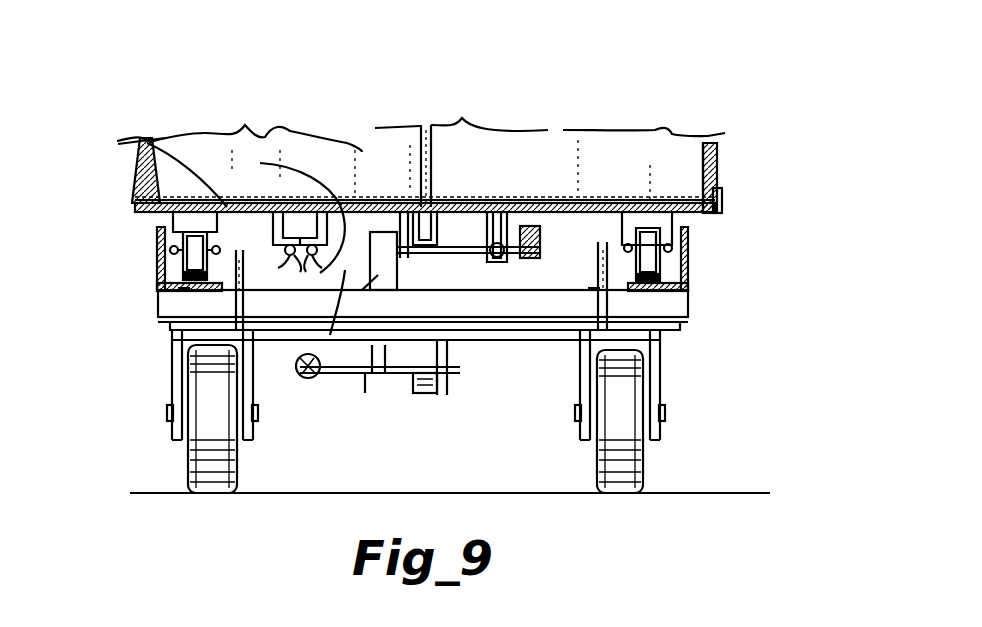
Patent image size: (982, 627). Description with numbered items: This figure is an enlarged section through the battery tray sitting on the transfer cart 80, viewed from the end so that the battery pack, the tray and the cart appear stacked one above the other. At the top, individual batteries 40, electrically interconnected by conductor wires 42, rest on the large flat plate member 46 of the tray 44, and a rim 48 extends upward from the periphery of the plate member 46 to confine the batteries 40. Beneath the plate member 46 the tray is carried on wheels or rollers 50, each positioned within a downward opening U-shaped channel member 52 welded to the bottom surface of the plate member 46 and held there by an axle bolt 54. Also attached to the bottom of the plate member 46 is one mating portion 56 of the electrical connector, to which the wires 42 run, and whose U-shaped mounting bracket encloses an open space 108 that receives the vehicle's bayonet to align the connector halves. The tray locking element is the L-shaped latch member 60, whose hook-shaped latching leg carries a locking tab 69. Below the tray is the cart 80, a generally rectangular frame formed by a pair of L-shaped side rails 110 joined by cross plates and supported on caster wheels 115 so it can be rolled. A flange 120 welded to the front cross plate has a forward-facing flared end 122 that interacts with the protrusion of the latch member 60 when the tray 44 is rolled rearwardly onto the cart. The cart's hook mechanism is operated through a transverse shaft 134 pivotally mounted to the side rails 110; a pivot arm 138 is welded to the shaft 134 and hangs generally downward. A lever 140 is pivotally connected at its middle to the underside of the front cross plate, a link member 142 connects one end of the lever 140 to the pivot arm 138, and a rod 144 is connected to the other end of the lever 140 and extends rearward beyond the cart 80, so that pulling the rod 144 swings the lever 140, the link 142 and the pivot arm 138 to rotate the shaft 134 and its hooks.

The individual batteries 40 is at (360, 152).
The electrical conductor wires 42 is at (268, 250).
The tray 44 is at (752, 173).
The plate member 46 is at (653, 207).
The rim 48 is at (722, 190).
The wheels or rollers 50 is at (187, 262).
The U-shaped channel members 52 is at (140, 145).
The axle bolts 54 is at (160, 241).
The mating portion of electrical connector 56 is at (357, 330).
The L-shaped latch member 60 is at (470, 253).
The locking tab 69 is at (420, 203).
The cart 80 is at (742, 383).
The open space 108 is at (345, 270).
The L-shaped side rails 110 is at (165, 290).
The caster wheels 115 is at (203, 447).
The flange 120 is at (372, 268).
The flared end 122 is at (360, 415).
The shaft 134 is at (498, 340).
The pivot arm 138 is at (447, 372).
The lever 140 is at (318, 380).
The link member 142 is at (423, 392).
The rod 144 is at (297, 370).